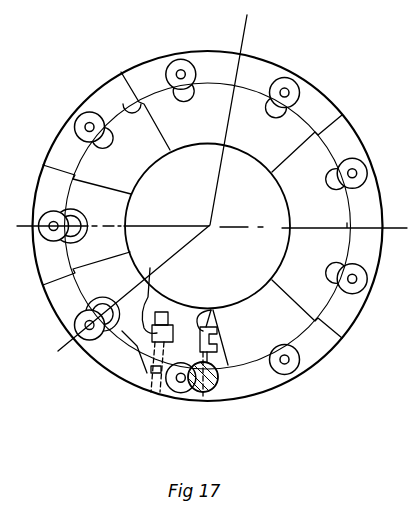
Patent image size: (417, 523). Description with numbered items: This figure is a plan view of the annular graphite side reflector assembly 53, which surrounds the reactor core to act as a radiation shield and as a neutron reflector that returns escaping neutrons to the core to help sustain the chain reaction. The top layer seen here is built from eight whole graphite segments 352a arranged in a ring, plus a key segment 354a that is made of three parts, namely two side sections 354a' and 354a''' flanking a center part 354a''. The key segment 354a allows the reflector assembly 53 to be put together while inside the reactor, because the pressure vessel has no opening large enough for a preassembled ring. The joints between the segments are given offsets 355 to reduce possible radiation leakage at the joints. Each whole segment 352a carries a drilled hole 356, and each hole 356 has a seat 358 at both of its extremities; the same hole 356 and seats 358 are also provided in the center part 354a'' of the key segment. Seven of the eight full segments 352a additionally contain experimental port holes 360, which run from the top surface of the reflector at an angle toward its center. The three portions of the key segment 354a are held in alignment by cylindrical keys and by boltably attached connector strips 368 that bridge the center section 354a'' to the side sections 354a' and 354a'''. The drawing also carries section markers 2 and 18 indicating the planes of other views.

The section line 2- 2 is at (17, 226).
The section line 18- 18 is at (247, 15).
The graphite side reflector assembly 53 is at (313, 378).
The whole graphite segment 352a is at (225, 47).
The key segment 354a is at (204, 278).
The side section of key segment 354a' is at (132, 364).
The center part of key segment 354a'' is at (192, 381).
The side section of key segment 354a''' is at (233, 390).
The offset 355 is at (123, 106).
The drilled hole 356 is at (181, 63).
The seat 358 is at (75, 323).
The experimental port hole 360 is at (82, 212).
The connector strip 368 is at (150, 268).